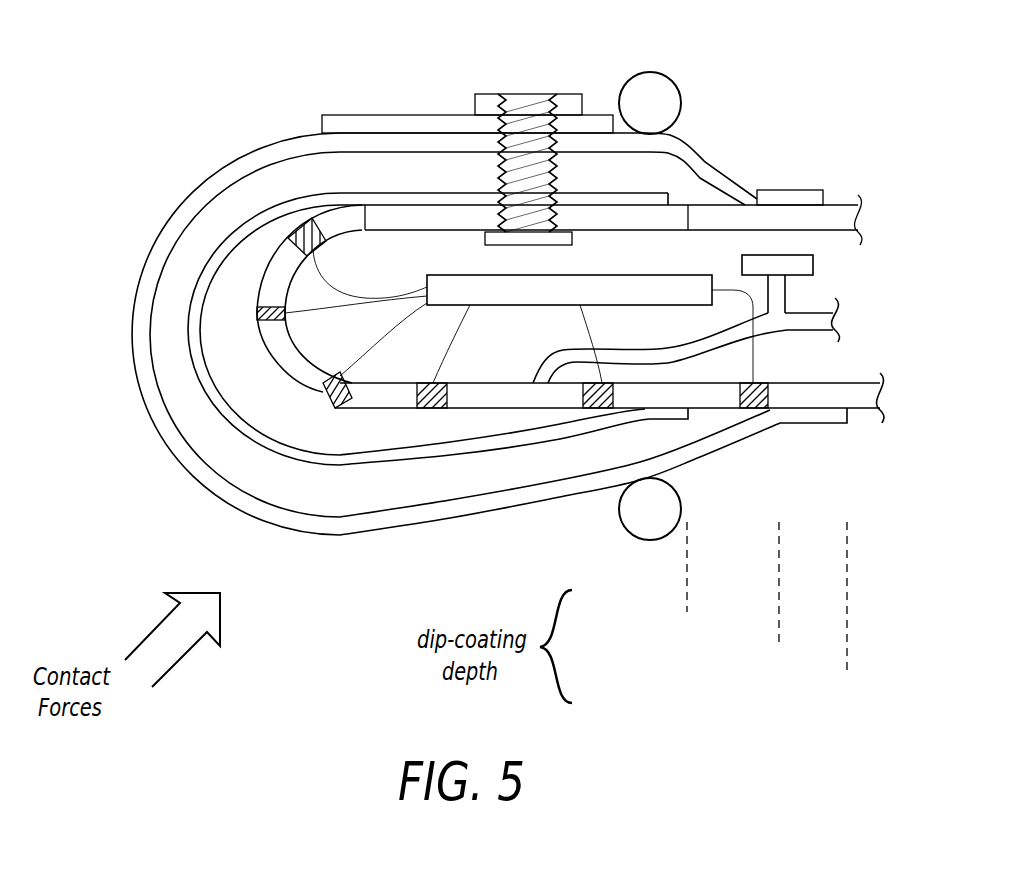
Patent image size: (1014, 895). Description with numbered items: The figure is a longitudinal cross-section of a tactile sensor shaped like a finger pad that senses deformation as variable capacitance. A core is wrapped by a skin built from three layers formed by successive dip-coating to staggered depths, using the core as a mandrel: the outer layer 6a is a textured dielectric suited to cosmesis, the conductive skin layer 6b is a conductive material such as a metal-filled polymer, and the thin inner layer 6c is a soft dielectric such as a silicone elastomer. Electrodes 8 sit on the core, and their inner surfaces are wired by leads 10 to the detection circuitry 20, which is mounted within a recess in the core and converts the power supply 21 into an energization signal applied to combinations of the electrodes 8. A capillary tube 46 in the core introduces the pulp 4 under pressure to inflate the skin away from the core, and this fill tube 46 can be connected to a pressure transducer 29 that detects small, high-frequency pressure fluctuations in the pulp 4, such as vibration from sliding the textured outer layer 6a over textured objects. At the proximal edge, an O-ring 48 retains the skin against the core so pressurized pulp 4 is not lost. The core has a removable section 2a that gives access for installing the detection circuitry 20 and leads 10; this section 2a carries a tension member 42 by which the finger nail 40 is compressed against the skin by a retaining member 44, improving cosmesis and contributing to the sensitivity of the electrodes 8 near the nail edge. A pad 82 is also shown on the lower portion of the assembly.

The finger nail 40 is at (385, 110).
The retaining member 44 is at (483, 90).
The tension member 42 is at (530, 90).
The removable section 2a is at (422, 231).
The O-ring 48 is at (652, 68).
The power supply 21 is at (743, 215).
The pulp 4 is at (230, 273).
The outer layer 6a is at (132, 292).
The conductive skin layer 6b is at (198, 426).
The inner layer 6c is at (240, 430).
The electrodes 8 is at (432, 417).
The contact pad 82 is at (781, 379).
The detection circuitry 20 is at (547, 275).
The leads 10 is at (572, 332).
The pressure transducer 29 is at (826, 265).
The capillary tube 46 is at (790, 336).